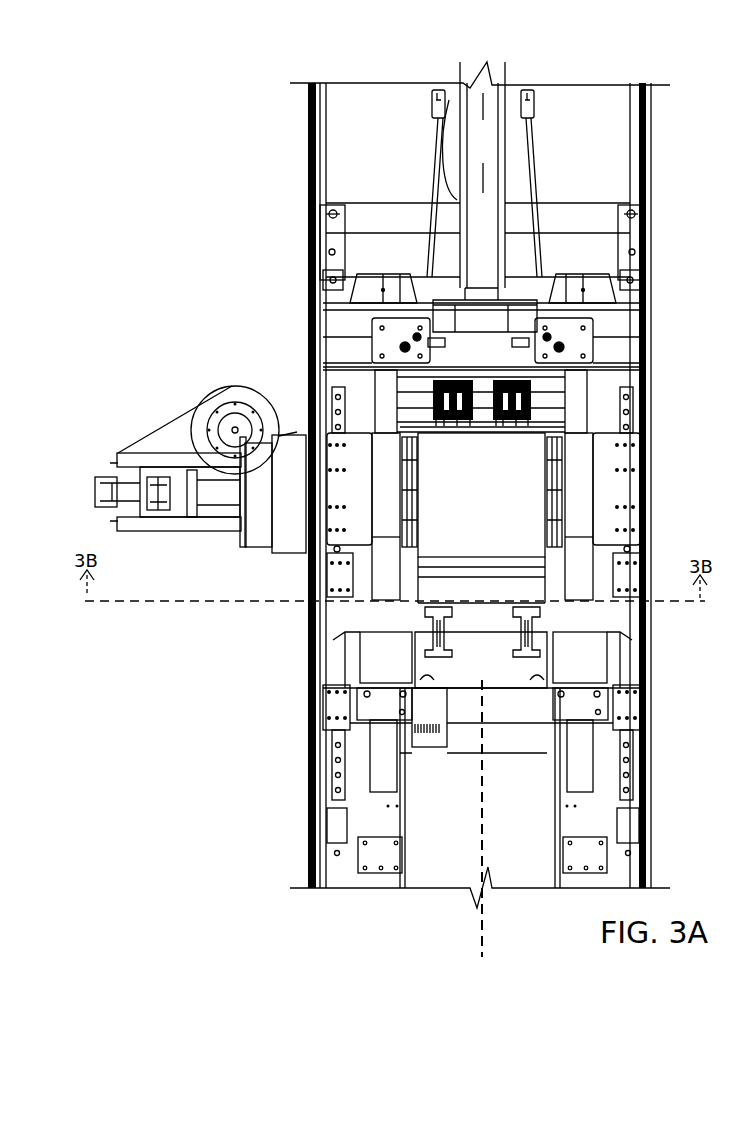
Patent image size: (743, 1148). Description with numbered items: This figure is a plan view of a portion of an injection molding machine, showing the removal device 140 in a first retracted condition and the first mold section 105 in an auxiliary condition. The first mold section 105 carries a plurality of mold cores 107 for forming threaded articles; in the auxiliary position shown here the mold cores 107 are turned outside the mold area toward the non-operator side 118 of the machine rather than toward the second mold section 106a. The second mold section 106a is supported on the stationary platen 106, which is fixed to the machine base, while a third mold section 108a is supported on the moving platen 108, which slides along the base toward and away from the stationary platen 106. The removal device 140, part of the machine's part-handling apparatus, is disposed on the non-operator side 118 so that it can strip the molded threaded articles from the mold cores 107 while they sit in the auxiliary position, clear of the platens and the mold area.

The first mold section 105 is at (416, 453).
The stationary platen 106 is at (583, 350).
The second mold section 106a is at (533, 382).
The mold cores 107 is at (407, 475).
The moving platen 108 is at (598, 660).
The third mold section 108a is at (530, 592).
The non-operator side 118 is at (258, 862).
The removal device 140 is at (306, 401).